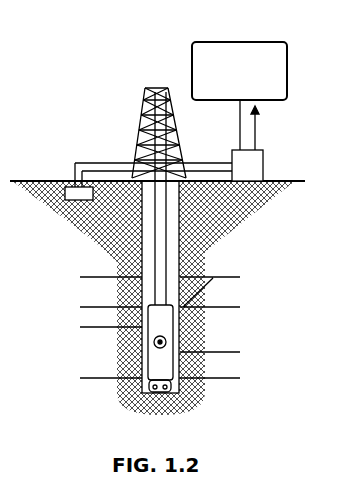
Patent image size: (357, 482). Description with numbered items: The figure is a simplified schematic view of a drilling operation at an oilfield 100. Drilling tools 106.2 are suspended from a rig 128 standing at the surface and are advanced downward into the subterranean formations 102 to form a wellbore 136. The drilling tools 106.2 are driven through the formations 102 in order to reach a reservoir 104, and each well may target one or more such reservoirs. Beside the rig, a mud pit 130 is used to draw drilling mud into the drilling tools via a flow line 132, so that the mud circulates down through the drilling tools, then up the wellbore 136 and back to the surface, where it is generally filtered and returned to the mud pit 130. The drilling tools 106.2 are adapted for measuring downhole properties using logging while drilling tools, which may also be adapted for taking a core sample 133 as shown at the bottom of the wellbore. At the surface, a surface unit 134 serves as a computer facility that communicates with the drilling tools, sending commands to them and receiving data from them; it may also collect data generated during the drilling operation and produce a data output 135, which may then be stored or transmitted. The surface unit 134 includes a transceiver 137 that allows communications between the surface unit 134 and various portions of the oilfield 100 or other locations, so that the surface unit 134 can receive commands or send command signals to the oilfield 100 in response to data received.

The oilfield 100 is at (82, 92).
The subterranean formations 102 is at (250, 270).
The reservoir 104 is at (238, 340).
The drilling tools 106.2 is at (124, 303).
The rig 128 is at (138, 130).
The mud pit 130 is at (72, 202).
The flow line 132 is at (75, 164).
The core sample 133 is at (137, 390).
The surface unit 134 is at (263, 165).
The data output 135 is at (258, 42).
The wellbore 136 is at (186, 233).
The transceiver 137 is at (258, 128).